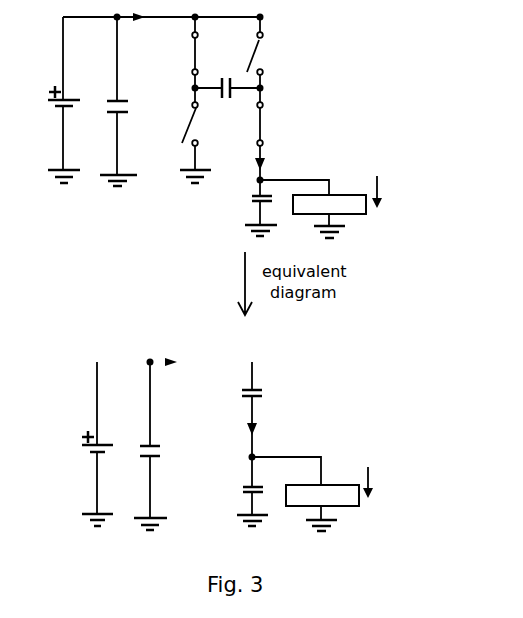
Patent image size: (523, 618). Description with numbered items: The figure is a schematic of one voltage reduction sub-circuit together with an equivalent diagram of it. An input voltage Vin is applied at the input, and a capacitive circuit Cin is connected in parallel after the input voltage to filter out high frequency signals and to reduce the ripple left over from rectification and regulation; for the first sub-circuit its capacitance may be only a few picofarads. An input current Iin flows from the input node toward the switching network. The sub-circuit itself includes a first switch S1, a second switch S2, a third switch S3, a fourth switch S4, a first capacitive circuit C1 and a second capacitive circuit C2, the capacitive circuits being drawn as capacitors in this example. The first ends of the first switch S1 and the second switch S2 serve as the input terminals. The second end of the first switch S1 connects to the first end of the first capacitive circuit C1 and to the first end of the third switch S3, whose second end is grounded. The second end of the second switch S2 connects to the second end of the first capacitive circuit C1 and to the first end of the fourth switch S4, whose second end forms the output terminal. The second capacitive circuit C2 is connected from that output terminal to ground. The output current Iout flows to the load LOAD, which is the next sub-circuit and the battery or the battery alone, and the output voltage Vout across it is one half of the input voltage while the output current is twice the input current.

The input current Iin is at (148, 183).
The input voltage Vin is at (86, 271).
The capacitive circuit Cin is at (139, 272).
The first switch S1 is at (178, 51).
The second switch S2 is at (273, 51).
The third switch S3 is at (183, 135).
The fourth switch S4 is at (281, 134).
The first capacitive circuit C1 is at (246, 256).
The second capacitive circuit C2 is at (244, 352).
The output current Iout is at (277, 303).
The load LOAD is at (309, 355).
The output voltage Vout is at (389, 338).